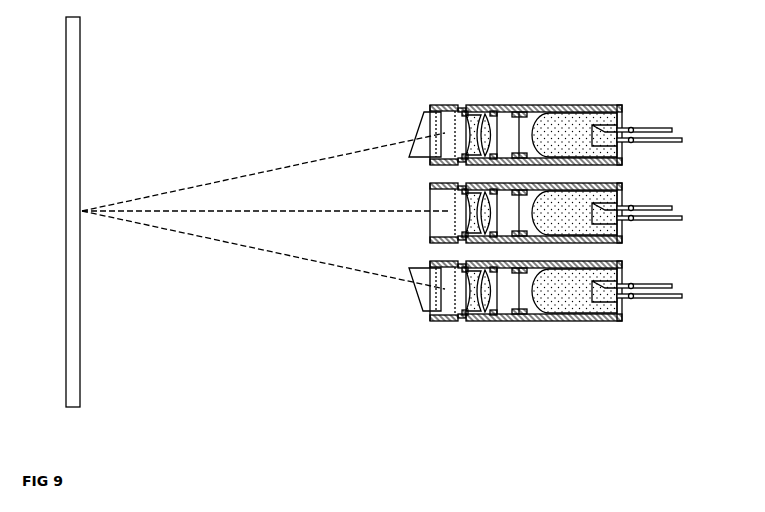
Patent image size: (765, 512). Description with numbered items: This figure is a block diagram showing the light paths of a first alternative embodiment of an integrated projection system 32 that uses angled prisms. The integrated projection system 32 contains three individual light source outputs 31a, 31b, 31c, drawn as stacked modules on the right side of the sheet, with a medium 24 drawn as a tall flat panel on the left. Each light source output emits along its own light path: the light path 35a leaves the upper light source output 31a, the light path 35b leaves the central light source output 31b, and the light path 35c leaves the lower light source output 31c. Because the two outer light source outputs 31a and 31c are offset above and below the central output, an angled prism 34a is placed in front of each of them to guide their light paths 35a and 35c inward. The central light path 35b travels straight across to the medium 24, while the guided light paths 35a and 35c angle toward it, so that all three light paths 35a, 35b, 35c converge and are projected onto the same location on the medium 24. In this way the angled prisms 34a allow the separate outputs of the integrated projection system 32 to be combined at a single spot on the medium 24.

The medium 24 is at (80, 391).
The light source output 31a is at (563, 105).
The light source output 31b is at (605, 183).
The light source output 31c is at (597, 318).
The integrated projection system 32 is at (521, 223).
The angled prism 34a is at (424, 112).
The light path 35a is at (370, 145).
The light path 35b is at (387, 210).
The light path 35c is at (358, 278).